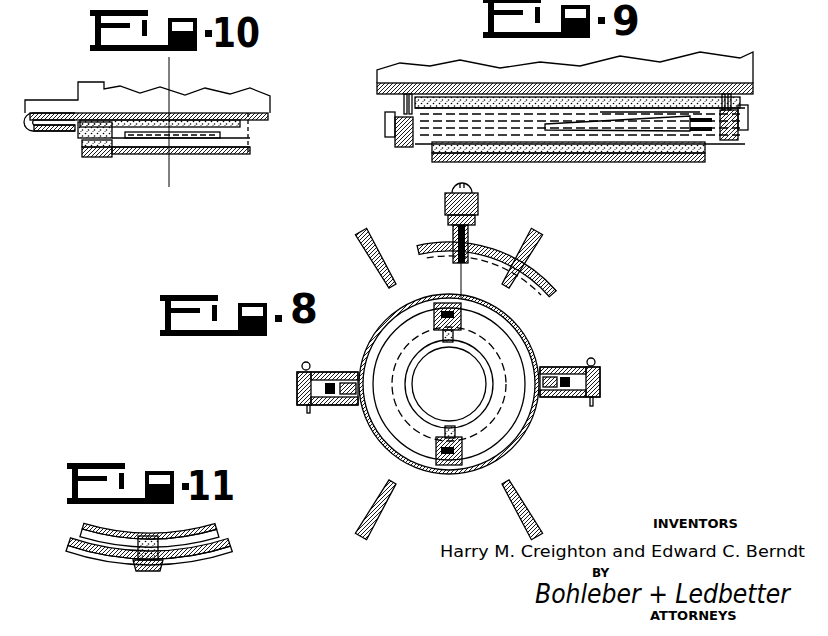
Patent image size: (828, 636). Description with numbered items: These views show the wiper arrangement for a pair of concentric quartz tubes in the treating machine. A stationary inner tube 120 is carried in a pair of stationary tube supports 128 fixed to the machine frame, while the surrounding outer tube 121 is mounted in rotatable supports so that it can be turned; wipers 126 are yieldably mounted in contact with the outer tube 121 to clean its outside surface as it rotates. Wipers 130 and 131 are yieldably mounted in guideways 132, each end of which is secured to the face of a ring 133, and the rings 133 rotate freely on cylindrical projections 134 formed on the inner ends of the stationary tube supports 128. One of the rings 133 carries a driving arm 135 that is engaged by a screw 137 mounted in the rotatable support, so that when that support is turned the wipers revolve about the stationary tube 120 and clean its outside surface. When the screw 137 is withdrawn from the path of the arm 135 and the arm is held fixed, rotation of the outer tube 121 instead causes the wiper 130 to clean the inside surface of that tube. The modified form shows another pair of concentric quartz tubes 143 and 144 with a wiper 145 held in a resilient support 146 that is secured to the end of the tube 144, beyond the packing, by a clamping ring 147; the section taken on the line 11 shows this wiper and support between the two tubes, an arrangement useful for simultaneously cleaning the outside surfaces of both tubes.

In FIG. 10, the section line 11— 11 is at (170, 180).
In FIG. 9, the tube 120 is at (663, 84).
In FIG. 8, the tube 120 is at (471, 414).
In FIG. 9, the tube 121 is at (583, 162).
In FIG. 8, the tube 121 is at (380, 430).
In FIG. 8, the wipers 126 is at (355, 405).
In FIG. 9, the stationary tube supports 128 is at (385, 126).
In FIG. 9, the wiper 130 is at (655, 162).
In FIG. 8, the wiper 130 is at (436, 300).
In FIG. 9, the wiper 131 is at (703, 88).
In FIG. 8, the wiper 131 is at (441, 337).
In FIG. 9, the guideways 132 is at (428, 140).
In FIG. 8, the guideways 132 is at (458, 312).
In FIG. 9, the ring 133 is at (400, 146).
In FIG. 8, the ring 133 is at (506, 345).
In FIG. 9, the cylindrical projections 134 is at (401, 108).
In FIG. 8, the driving arm 135 is at (461, 278).
In FIG. 8, the screw 137 is at (457, 254).
In FIG. 10, the quartz tube 143 is at (248, 120).
In FIG. 11, the quartz tube 143 is at (216, 525).
In FIG. 10, the quartz tube 144 is at (250, 152).
In FIG. 11, the quartz tube 144 is at (231, 551).
In FIG. 10, the wiper 145 is at (115, 142).
In FIG. 11, the wiper 145 is at (160, 522).
In FIG. 10, the resilient support 146 is at (160, 140).
In FIG. 11, the resilient support 146 is at (148, 571).
In FIG. 10, the clamping ring 147 is at (82, 152).
In FIG. 11, the clamping ring 147 is at (96, 572).